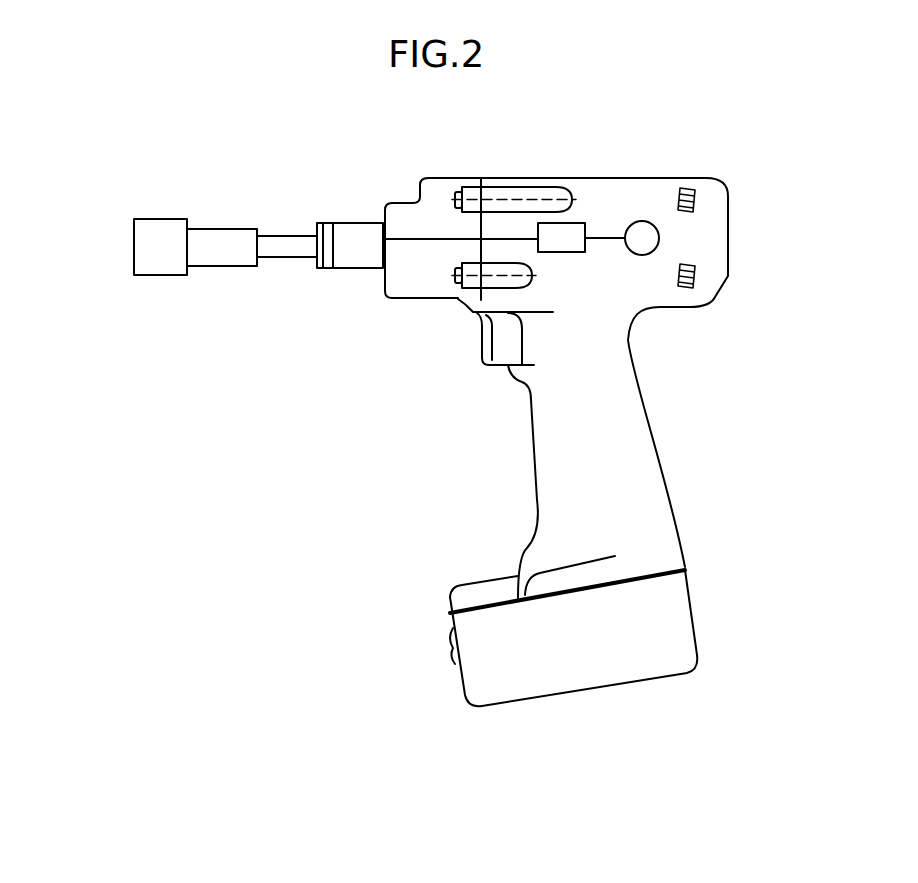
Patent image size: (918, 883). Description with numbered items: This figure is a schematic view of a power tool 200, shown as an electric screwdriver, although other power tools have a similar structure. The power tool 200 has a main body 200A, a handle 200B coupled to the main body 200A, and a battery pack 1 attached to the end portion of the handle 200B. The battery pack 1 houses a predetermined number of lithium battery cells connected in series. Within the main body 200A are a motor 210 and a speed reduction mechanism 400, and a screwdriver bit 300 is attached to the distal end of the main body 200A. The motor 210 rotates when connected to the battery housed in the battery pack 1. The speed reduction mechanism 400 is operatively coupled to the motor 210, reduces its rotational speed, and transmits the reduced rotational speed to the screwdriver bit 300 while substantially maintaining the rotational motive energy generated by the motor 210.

The battery pack 1 is at (505, 693).
The power tool 200 is at (521, 388).
The main body 200A is at (612, 182).
The handle 200B is at (647, 417).
The motor 210 is at (646, 222).
The screwdriver bit 300 is at (226, 254).
The speed reduction mechanism 400 is at (583, 223).